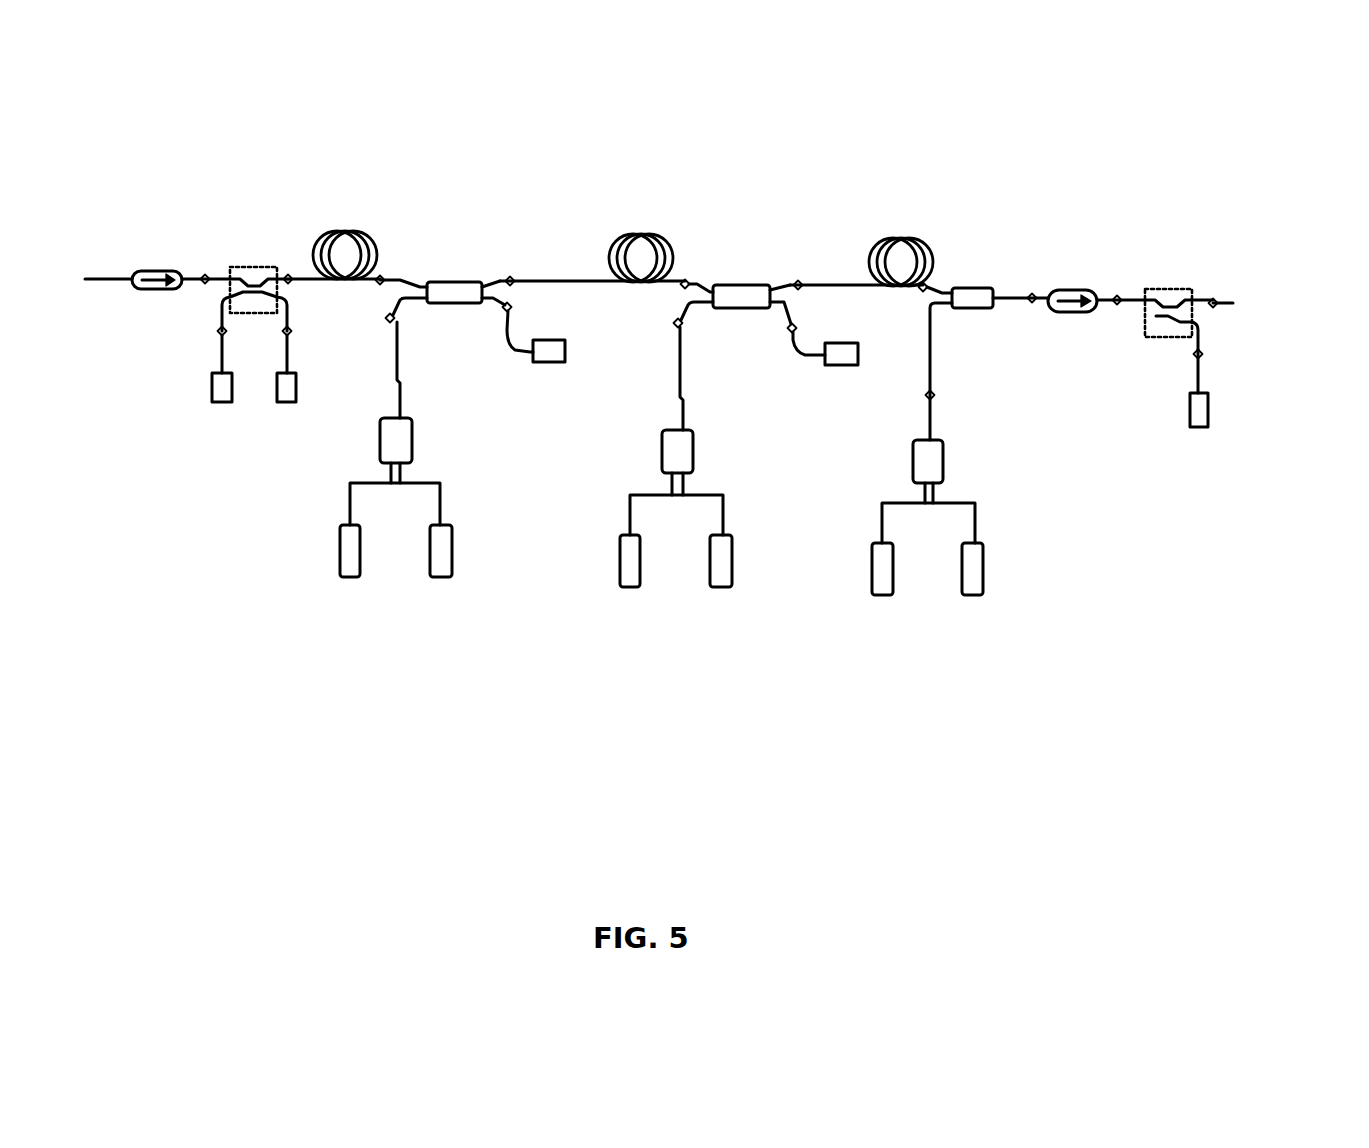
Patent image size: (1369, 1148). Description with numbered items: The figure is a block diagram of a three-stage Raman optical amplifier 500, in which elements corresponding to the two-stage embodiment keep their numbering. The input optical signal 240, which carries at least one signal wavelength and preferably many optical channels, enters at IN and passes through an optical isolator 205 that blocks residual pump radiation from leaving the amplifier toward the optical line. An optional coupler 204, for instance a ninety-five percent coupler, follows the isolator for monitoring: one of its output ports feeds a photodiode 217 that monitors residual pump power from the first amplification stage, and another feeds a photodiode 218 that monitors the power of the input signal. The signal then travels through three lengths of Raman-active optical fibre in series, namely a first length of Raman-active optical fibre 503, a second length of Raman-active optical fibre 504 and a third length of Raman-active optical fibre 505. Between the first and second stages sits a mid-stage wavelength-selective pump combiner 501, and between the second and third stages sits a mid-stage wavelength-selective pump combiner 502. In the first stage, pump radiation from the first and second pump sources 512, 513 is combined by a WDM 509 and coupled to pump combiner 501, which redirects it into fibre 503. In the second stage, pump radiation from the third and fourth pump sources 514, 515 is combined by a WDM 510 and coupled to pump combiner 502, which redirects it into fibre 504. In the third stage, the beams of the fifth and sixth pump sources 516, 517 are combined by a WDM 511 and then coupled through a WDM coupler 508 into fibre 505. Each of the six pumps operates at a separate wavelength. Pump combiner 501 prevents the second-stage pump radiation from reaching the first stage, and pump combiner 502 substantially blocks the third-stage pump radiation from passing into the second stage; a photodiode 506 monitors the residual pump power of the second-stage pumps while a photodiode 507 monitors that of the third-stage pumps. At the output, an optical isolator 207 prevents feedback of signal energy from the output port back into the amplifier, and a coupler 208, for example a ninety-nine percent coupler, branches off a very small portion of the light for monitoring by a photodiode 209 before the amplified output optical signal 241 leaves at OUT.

The fiber optic amplifier system 500 is at (910, 156).
The input optical signal 240 is at (87, 279).
The amplified output optical signal 241 is at (1233, 303).
The optical isolator 205 is at (148, 271).
The optical isolator 207 is at (1073, 290).
The coupler 204 is at (252, 267).
The coupler 208 is at (1170, 289).
The photodiode 217 is at (211, 395).
The photodiode 218 is at (277, 397).
The photodiode 209 is at (1193, 427).
The first length of Raman-active optical fibre 503 is at (348, 232).
The length of Raman-active optical fibre 504 is at (641, 234).
The third length of Raman-active optical fibre 505 is at (897, 240).
The mid-stage wavelength-selective pump combiner 501 is at (460, 280).
The mid-stage wavelength-selective pump combiner 502 is at (746, 282).
The photodiode 506 is at (534, 363).
The photodiode 507 is at (827, 365).
The WDM coupler 508 is at (968, 310).
The WDM 509 is at (412, 441).
The WDM 510 is at (693, 455).
The WDM 511 is at (943, 463).
The pump source 512 is at (340, 561).
The pump source 513 is at (430, 562).
The pump source 514 is at (618, 578).
The pump source 515 is at (708, 579).
The pump source 516 is at (870, 587).
The pump source 517 is at (984, 582).